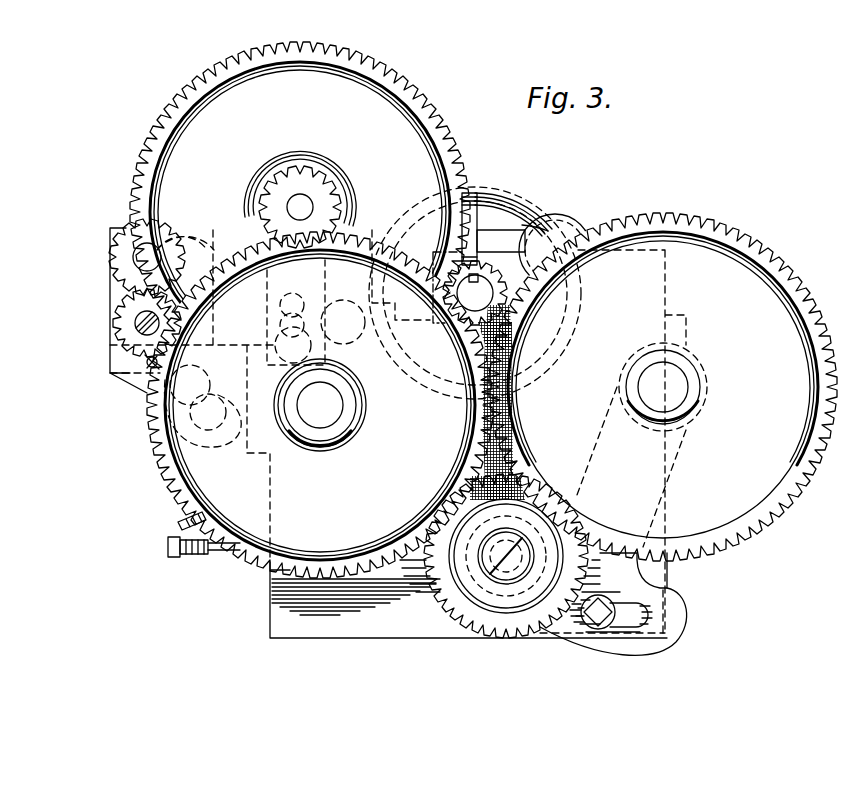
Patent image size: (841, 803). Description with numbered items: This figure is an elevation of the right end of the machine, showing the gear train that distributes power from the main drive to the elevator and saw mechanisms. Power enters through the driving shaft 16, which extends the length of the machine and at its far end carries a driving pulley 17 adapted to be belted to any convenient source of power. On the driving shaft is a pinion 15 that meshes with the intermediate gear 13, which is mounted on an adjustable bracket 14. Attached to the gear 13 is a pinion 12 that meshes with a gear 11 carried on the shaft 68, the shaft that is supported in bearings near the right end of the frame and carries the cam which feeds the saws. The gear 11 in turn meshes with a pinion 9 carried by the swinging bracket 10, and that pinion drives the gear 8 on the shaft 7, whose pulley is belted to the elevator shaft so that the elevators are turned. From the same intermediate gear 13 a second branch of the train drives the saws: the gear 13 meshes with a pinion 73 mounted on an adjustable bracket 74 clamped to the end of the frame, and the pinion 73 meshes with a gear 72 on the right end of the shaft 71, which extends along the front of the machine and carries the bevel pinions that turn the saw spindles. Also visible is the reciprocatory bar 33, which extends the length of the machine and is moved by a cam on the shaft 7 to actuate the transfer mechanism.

The shaft 7 is at (678, 387).
The gear 8 is at (663, 423).
The pinion 9 is at (506, 572).
The swinging bracket 10 is at (634, 604).
The gear 11 is at (444, 599).
The pinion 12 is at (305, 198).
The gear 13 is at (305, 212).
The adjustable bracket 14 is at (301, 381).
The pinion 15 is at (492, 239).
The driving shaft 16 is at (475, 287).
The driving pulley 17 is at (541, 203).
The reciprocatory bar 33 is at (560, 240).
The shaft 68 is at (338, 405).
The shaft 71 is at (113, 257).
The gear 72 is at (94, 309).
The pinion 73 is at (111, 323).
The adjustable bracket 74 is at (100, 366).